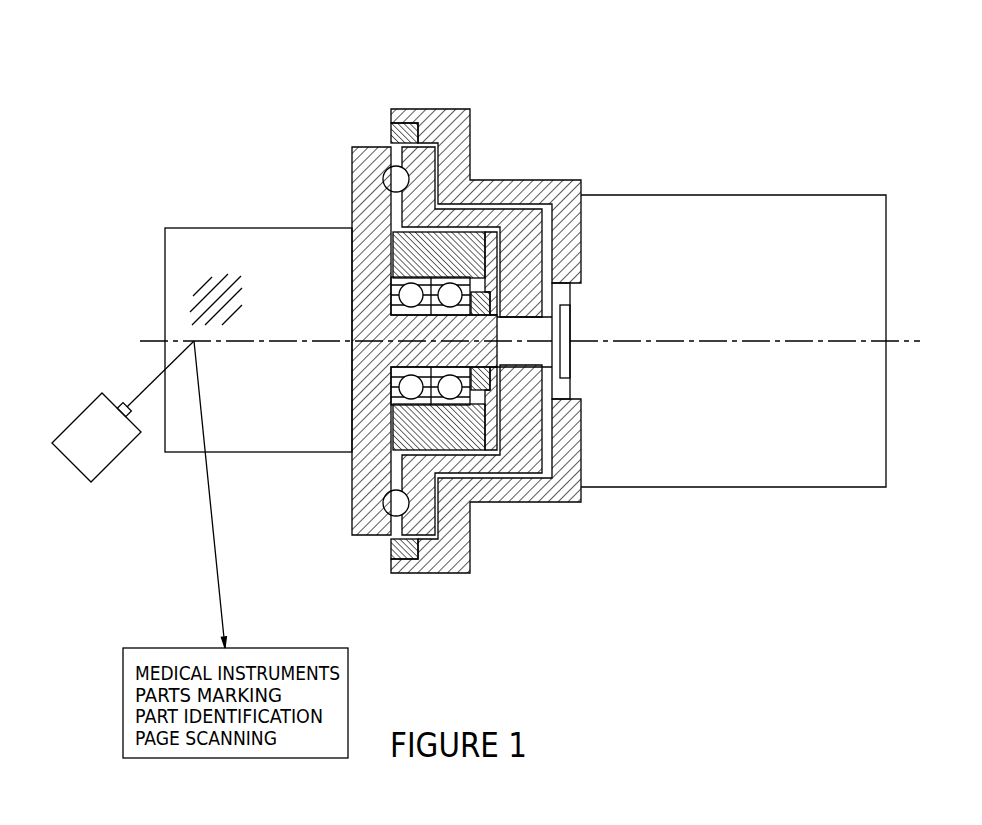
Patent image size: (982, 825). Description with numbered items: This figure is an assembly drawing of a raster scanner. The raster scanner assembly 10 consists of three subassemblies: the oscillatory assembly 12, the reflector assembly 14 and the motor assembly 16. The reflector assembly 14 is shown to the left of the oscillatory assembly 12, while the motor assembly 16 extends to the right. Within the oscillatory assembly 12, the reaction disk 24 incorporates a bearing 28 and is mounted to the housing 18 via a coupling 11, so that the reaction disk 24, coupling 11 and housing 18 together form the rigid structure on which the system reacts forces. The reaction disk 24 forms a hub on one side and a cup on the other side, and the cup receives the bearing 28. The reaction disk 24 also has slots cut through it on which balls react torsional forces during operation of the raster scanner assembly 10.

The raster scanner assembly 10 is at (597, 102).
The coupling 11 is at (419, 548).
The oscillatory assembly 12 is at (442, 109).
The reflector assembly 14 is at (256, 267).
The motor assembly 16 is at (745, 227).
The housing 18 is at (460, 550).
The reaction disk 24 is at (351, 538).
The bearing 28 is at (393, 278).